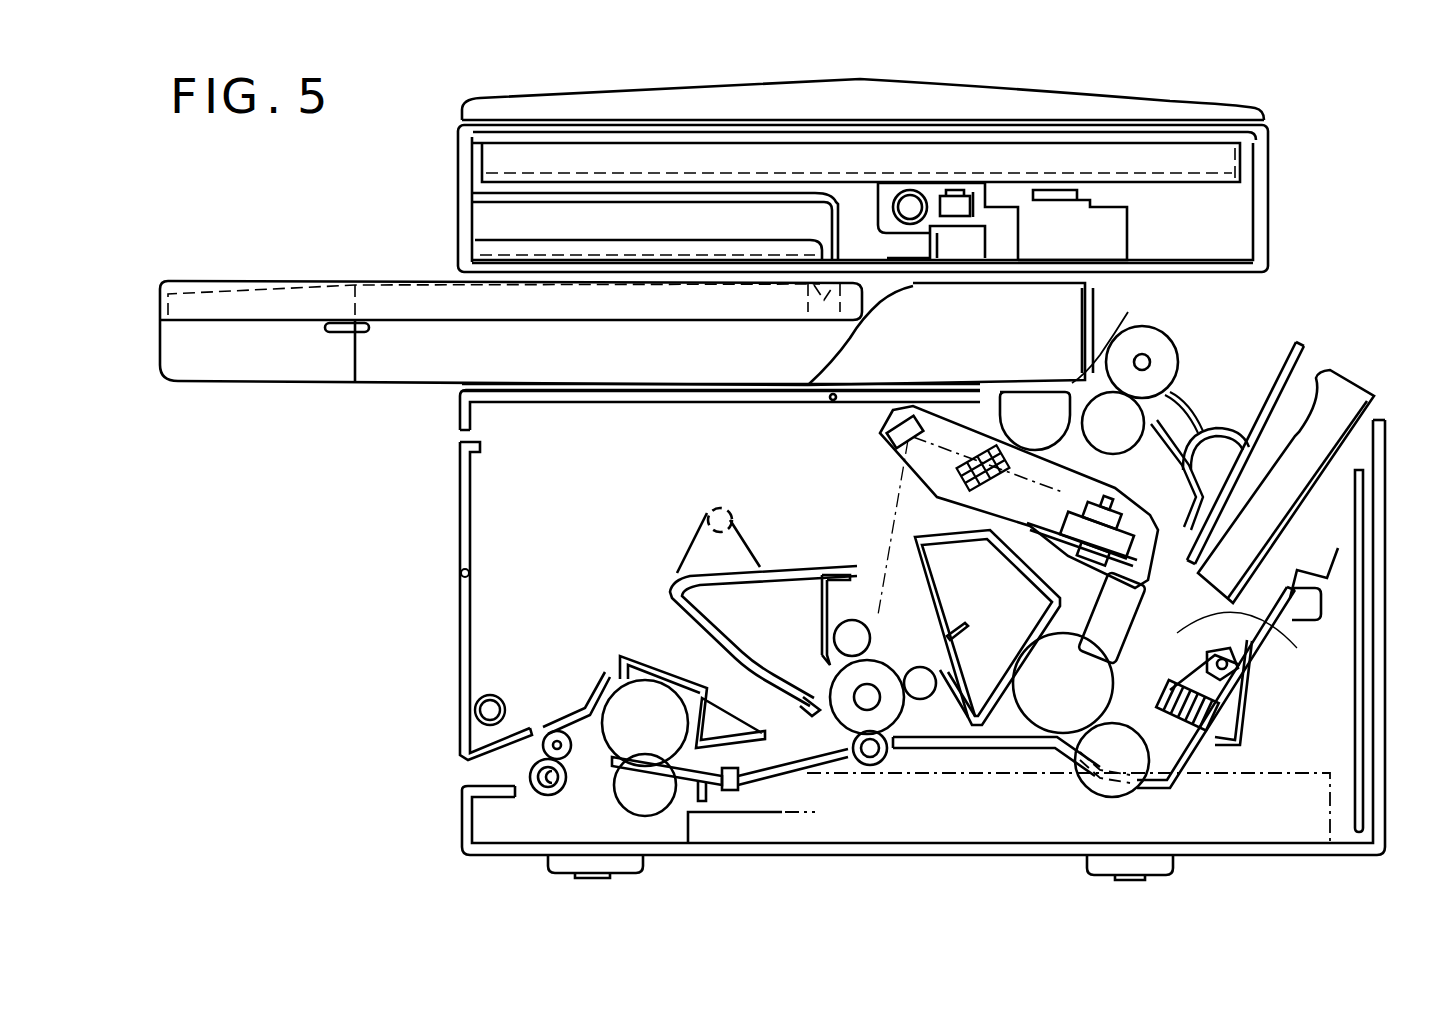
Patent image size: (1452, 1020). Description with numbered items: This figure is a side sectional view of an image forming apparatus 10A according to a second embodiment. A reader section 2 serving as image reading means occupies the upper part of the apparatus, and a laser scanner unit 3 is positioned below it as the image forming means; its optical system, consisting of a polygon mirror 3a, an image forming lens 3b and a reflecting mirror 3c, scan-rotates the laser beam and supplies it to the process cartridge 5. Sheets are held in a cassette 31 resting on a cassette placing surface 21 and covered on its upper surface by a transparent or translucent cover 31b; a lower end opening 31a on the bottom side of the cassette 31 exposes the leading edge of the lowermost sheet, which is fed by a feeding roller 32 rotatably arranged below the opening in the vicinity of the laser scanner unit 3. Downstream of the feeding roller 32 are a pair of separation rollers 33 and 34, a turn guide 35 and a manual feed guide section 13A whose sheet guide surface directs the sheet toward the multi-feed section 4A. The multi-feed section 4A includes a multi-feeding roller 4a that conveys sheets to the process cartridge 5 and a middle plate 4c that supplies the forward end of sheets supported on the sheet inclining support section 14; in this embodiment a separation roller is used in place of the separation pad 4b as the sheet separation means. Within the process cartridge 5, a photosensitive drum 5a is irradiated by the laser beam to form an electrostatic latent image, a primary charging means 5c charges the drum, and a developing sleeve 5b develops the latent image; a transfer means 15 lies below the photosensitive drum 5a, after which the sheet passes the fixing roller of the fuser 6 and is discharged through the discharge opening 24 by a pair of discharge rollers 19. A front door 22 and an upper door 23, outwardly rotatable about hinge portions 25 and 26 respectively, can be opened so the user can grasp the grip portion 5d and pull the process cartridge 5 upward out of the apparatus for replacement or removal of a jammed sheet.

The reader section 2 is at (1245, 221).
The laser scanner unit 3 is at (1130, 508).
The polygon mirror 3a is at (1137, 545).
The image forming lens 3b is at (1010, 467).
The reflecting mirror 3c is at (895, 440).
The multi-feeding roller 4a is at (1035, 715).
The separation pad 4b is at (1095, 775).
The middle plate 4c is at (1230, 700).
The multi-feed section 4A is at (1257, 643).
The process cartridge 5 is at (668, 603).
The photosensitive drum 5a is at (833, 690).
The developing sleeve 5b is at (920, 665).
The primary charging means 5c is at (835, 635).
The grip portion 5d is at (710, 517).
The fuser 6 is at (615, 745).
The image forming apparatus 10A is at (822, 906).
The manual feed guide section 13A is at (1303, 345).
The sheet inclining support section 14 is at (1375, 395).
The transfer means 15 is at (872, 772).
The pair of discharge rollers 19 is at (547, 758).
The cassette placing surface 21 is at (716, 383).
The front door 22 is at (462, 498).
The upper door 23 is at (460, 420).
The discharge opening 24 is at (490, 792).
The hinge portion 25 is at (460, 573).
The hinge portion 26 is at (833, 400).
The cassette 31 is at (200, 372).
The lower end opening 31a is at (1125, 322).
The cover 31b is at (243, 282).
The feeding roller 32 is at (1035, 410).
The separation roller 33 is at (1157, 345).
The separation roller 34 is at (1190, 410).
The turn guide 35 is at (1195, 415).